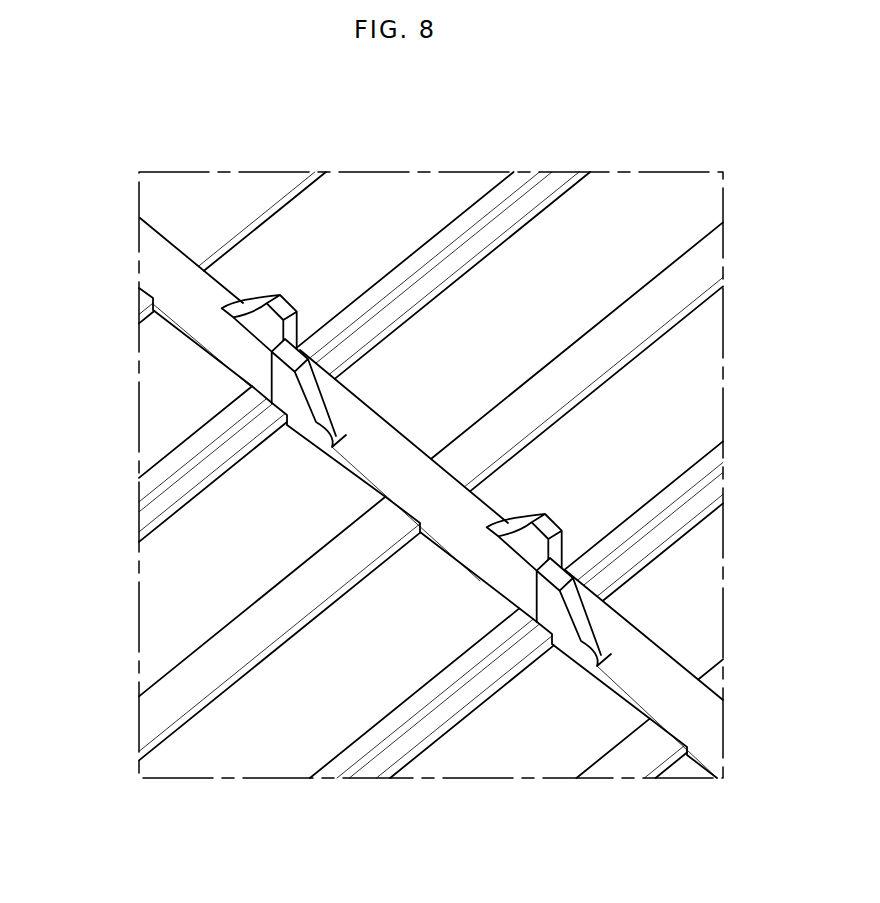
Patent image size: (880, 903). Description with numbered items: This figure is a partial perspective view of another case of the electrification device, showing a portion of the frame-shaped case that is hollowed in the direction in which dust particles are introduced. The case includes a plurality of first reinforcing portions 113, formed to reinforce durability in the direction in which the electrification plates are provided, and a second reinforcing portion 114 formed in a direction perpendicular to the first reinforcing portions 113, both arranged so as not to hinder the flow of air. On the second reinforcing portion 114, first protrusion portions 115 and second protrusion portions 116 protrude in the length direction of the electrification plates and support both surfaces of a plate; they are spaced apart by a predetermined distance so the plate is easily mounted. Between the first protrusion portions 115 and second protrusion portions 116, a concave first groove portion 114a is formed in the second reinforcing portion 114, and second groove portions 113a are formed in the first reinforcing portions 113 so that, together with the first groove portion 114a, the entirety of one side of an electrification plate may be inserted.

The first reinforcing portion 113 is at (640, 303).
The second groove portion 113a is at (427, 735).
The second reinforcing portion 114 is at (160, 272).
The first groove portion 114a is at (500, 592).
The first protrusion portion 115 is at (548, 527).
The second protrusion portion 116 is at (570, 592).